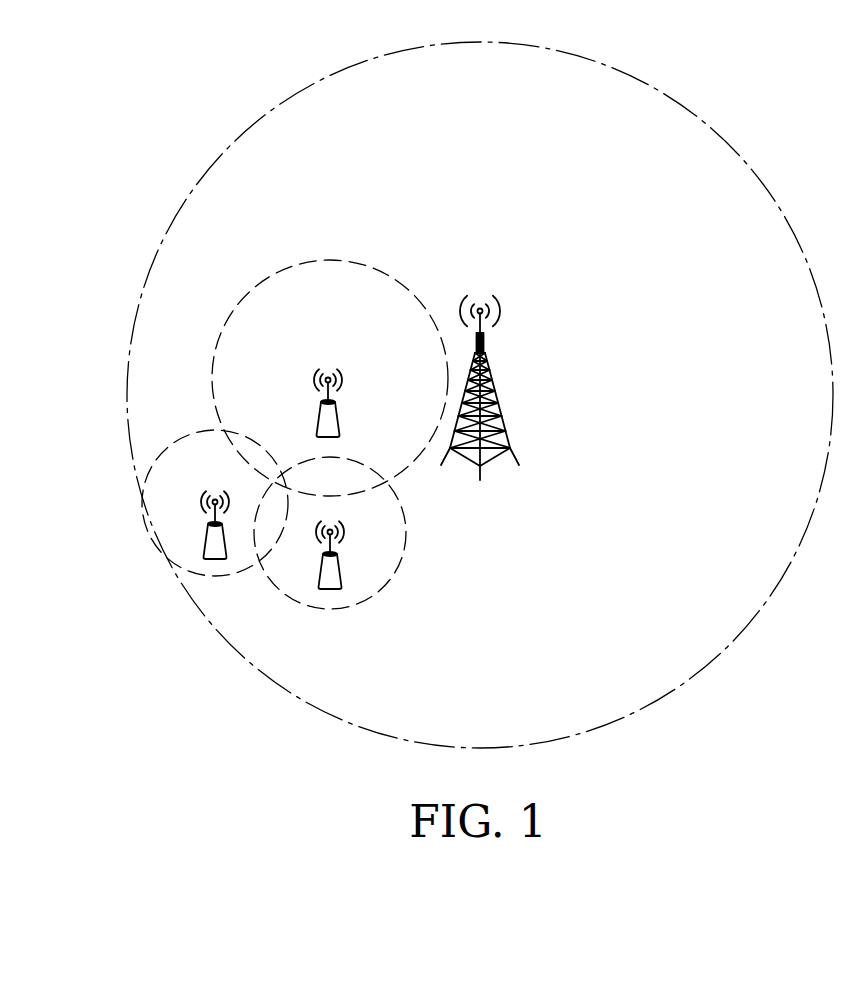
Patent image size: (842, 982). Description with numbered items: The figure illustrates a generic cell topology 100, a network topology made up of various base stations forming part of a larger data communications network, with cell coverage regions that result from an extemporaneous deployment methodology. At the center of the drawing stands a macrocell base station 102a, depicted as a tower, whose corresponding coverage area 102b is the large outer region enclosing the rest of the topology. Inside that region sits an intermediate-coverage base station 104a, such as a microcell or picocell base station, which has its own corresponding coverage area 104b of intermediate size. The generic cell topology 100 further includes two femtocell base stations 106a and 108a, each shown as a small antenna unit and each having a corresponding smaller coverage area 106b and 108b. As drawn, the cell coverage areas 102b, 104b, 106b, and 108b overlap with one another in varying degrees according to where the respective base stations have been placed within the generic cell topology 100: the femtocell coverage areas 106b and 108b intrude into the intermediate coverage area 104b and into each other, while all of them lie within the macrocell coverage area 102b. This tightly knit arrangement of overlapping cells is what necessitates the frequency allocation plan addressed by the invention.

The generic cell topology 100 is at (118, 64).
The macrocell base station 102a is at (492, 396).
The coverage area 102b is at (205, 175).
The intermediate-coverage base station 104a is at (318, 420).
The coverage area 104b is at (355, 260).
The femtocell base station 106a is at (215, 559).
The coverage area 106b is at (152, 465).
The femtocell base station 108a is at (330, 589).
The coverage area 108b is at (402, 557).